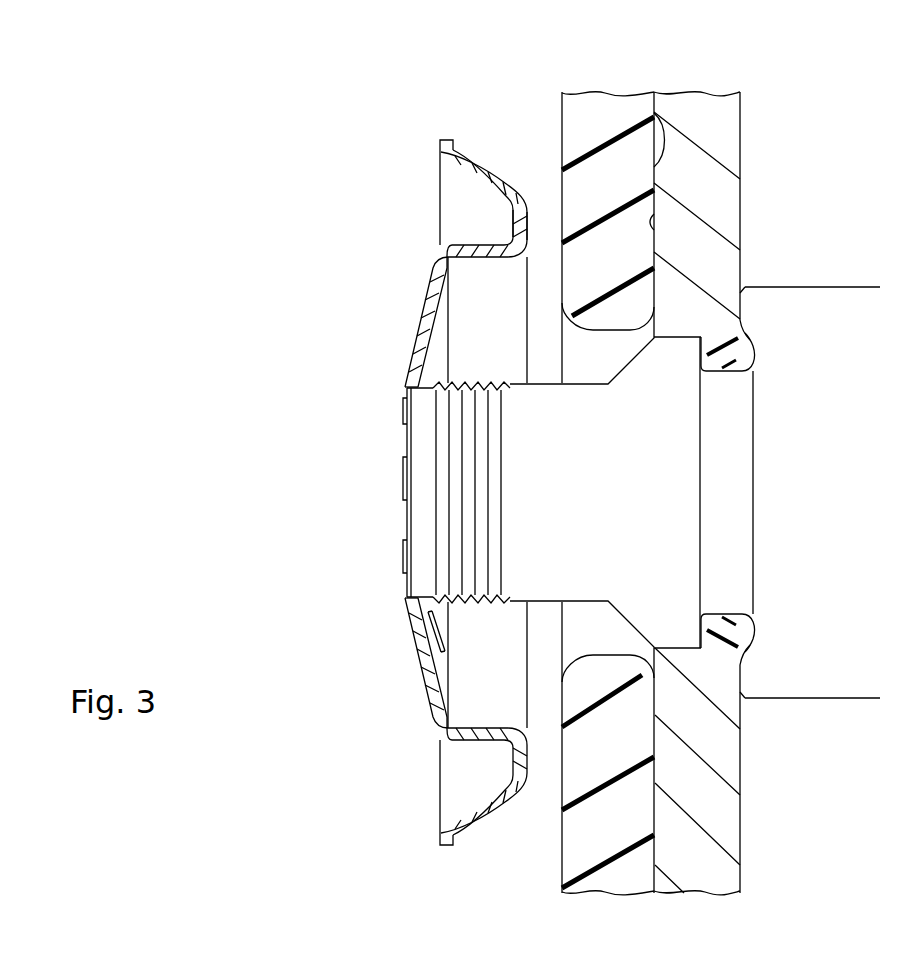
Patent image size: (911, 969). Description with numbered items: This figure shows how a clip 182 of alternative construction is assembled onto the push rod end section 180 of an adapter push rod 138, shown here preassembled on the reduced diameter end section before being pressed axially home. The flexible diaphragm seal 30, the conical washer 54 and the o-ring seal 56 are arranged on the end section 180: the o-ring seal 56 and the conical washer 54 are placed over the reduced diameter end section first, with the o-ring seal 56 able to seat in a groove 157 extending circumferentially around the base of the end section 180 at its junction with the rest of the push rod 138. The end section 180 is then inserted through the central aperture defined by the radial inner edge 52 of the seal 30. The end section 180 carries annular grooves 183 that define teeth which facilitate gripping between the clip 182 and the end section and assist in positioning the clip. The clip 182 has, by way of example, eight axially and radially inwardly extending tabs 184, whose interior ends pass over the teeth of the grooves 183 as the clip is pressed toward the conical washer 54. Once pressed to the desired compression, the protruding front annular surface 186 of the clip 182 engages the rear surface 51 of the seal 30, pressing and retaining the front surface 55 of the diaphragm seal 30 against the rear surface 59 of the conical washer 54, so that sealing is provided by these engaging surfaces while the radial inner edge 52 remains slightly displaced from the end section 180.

The flexible diaphragm seal 30 is at (567, 112).
The rear surface of the seal 51 is at (561, 800).
The radial inner edge of the seal 52 is at (610, 336).
The conical washer 54 is at (723, 123).
The front surface of the diaphragm seal 55 is at (650, 113).
The o-ring seal 56 is at (730, 370).
The rear surface of the conical washer 59 is at (654, 228).
The adapter push rod 138 is at (838, 287).
The groove 157 is at (752, 357).
The push rod end section 180 is at (427, 515).
The clip 182 is at (427, 169).
The annular grooves 183 is at (490, 383).
The tabs 184 is at (407, 473).
The protruding front annular surface 186 is at (527, 210).